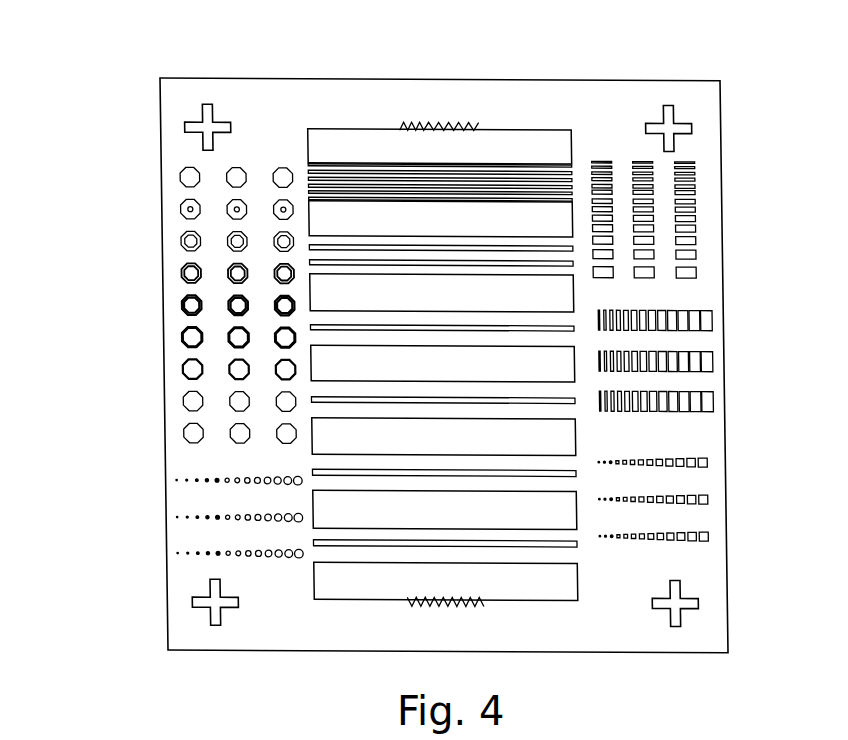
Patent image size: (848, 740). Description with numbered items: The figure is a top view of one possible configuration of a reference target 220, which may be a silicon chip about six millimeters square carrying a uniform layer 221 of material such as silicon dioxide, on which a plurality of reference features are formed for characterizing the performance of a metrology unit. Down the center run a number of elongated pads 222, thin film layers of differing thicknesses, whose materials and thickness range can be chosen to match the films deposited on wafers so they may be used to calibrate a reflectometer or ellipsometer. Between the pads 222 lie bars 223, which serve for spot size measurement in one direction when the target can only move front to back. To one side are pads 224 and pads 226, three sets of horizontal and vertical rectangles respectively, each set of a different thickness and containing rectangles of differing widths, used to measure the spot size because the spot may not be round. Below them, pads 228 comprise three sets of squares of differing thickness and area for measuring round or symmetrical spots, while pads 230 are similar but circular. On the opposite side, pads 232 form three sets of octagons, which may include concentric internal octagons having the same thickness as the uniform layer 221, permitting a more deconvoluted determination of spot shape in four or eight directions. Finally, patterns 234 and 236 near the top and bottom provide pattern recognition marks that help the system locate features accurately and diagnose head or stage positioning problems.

The reference target 220 is at (117, 110).
The uniform layer 221 is at (260, 110).
The elongated pads 222 is at (534, 271).
The bars 223 is at (416, 326).
The pads (horizontal rectangles) 224 is at (728, 159).
The pads (vertical rectangles) 226 is at (730, 305).
The pads (squares) 228 is at (728, 450).
The pads (circles) 230 is at (141, 473).
The pads (octagons) 232 is at (144, 172).
The pattern for pattern recognition 234 is at (451, 126).
The pattern for pattern recognition 236 is at (458, 604).